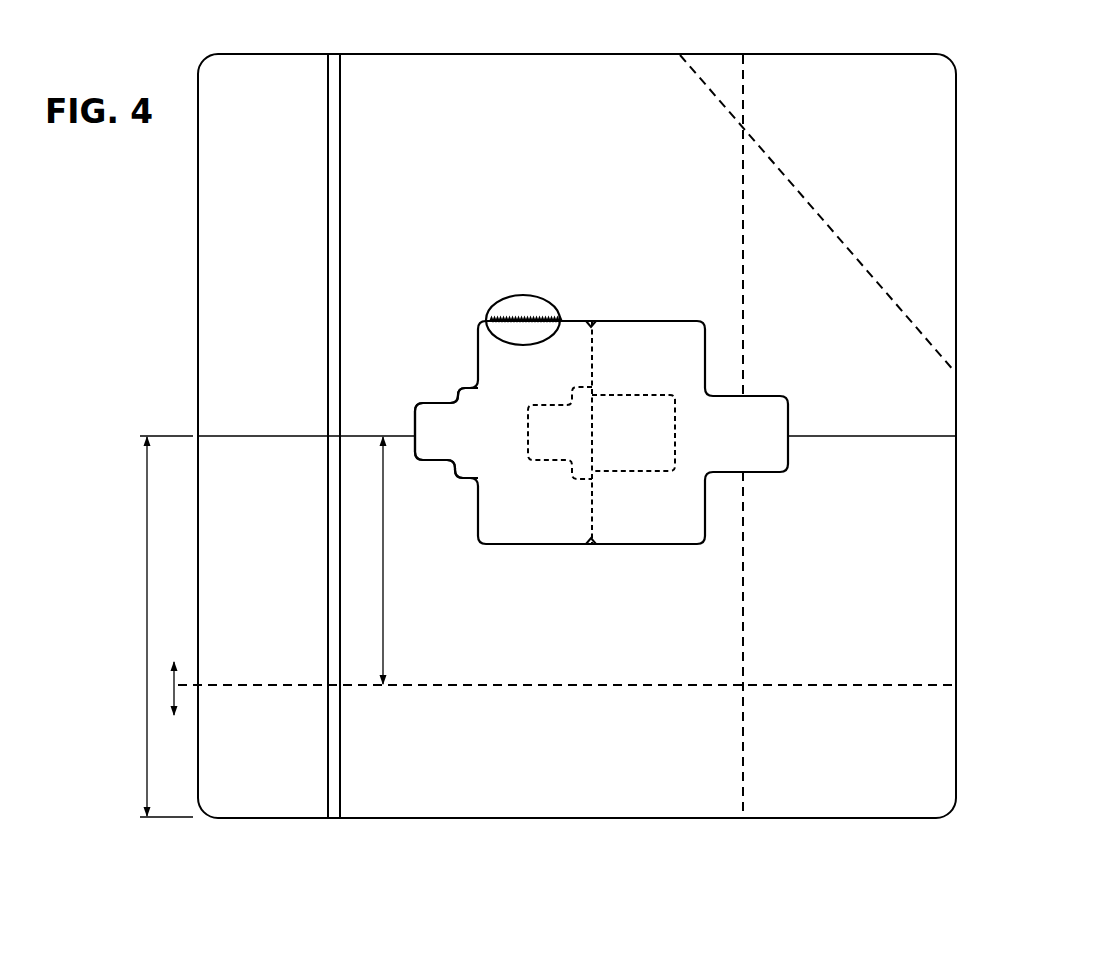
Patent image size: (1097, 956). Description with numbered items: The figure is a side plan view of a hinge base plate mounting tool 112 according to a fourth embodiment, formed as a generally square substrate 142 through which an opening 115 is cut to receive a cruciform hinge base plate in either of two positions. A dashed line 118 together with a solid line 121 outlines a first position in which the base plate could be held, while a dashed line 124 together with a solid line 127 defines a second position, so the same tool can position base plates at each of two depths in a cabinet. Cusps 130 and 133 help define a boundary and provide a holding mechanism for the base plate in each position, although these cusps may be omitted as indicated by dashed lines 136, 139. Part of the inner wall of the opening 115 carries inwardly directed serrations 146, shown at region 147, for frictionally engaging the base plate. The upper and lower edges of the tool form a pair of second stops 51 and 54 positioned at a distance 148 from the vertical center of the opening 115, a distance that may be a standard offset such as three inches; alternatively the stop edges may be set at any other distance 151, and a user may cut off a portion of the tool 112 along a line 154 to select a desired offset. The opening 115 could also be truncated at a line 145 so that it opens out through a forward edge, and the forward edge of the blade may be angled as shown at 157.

The hinge base plate mounting tool 112 is at (1004, 766).
The substrate 142 is at (372, 436).
The second stop 51 is at (511, 55).
The second stop 54 is at (427, 819).
The angled forward edge 157 is at (830, 218).
The line 145 is at (746, 727).
The line 154 is at (598, 686).
The distance 148 is at (176, 588).
The distance 151 is at (382, 548).
The opening 115 is at (460, 321).
The solid line 127 is at (437, 462).
The cusp 130 is at (595, 324).
The dashed line 136 is at (591, 322).
The dashed line 139 is at (591, 547).
The solid line 121 is at (660, 547).
The cusp 133 is at (593, 543).
The dashed line 118 is at (526, 455).
The dashed line 124 is at (677, 433).
The serrations 146 is at (512, 316).
The serrated region 147 is at (527, 296).